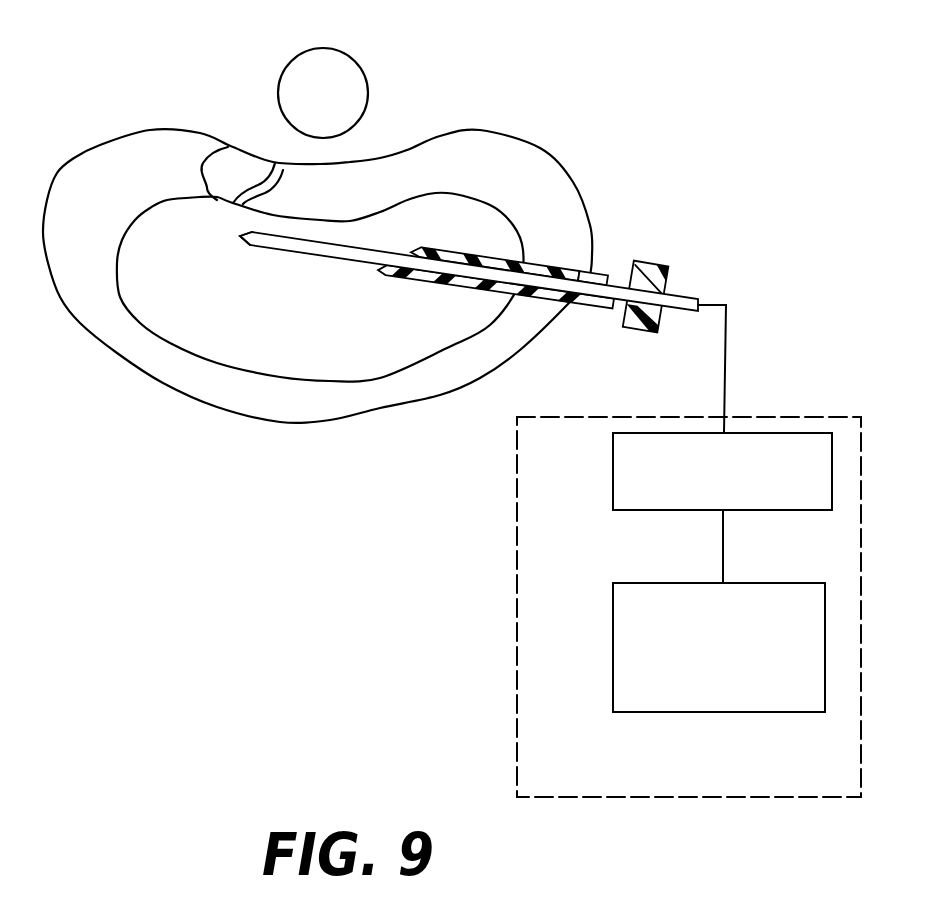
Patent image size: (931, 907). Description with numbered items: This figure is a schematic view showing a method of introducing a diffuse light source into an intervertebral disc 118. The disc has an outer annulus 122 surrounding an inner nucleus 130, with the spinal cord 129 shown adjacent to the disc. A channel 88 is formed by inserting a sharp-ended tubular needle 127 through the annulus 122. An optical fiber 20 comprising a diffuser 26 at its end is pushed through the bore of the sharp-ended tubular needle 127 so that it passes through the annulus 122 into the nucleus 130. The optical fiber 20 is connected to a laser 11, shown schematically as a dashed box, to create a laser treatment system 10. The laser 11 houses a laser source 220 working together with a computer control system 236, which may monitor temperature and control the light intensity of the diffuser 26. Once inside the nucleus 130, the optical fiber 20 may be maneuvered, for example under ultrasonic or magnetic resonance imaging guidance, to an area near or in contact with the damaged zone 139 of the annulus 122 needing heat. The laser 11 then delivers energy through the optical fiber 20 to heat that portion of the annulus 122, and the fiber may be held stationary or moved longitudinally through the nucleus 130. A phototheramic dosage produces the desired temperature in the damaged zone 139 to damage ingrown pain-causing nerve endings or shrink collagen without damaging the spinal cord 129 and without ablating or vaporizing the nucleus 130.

The laser treatment system 10 is at (181, 586).
The laser 11 is at (515, 512).
The optical fiber 20 is at (358, 247).
The diffuser 26 is at (252, 243).
The channel 88 is at (597, 272).
The intervertebral disc 118 is at (314, 220).
The annulus 122 is at (133, 163).
The sharp-ended tubular needle 127 is at (596, 312).
The spinal cord 129 is at (294, 61).
The nucleus 130 is at (264, 317).
The damaged zone 139 is at (238, 168).
The laser source 220 is at (668, 513).
The computer control system 236 is at (723, 712).